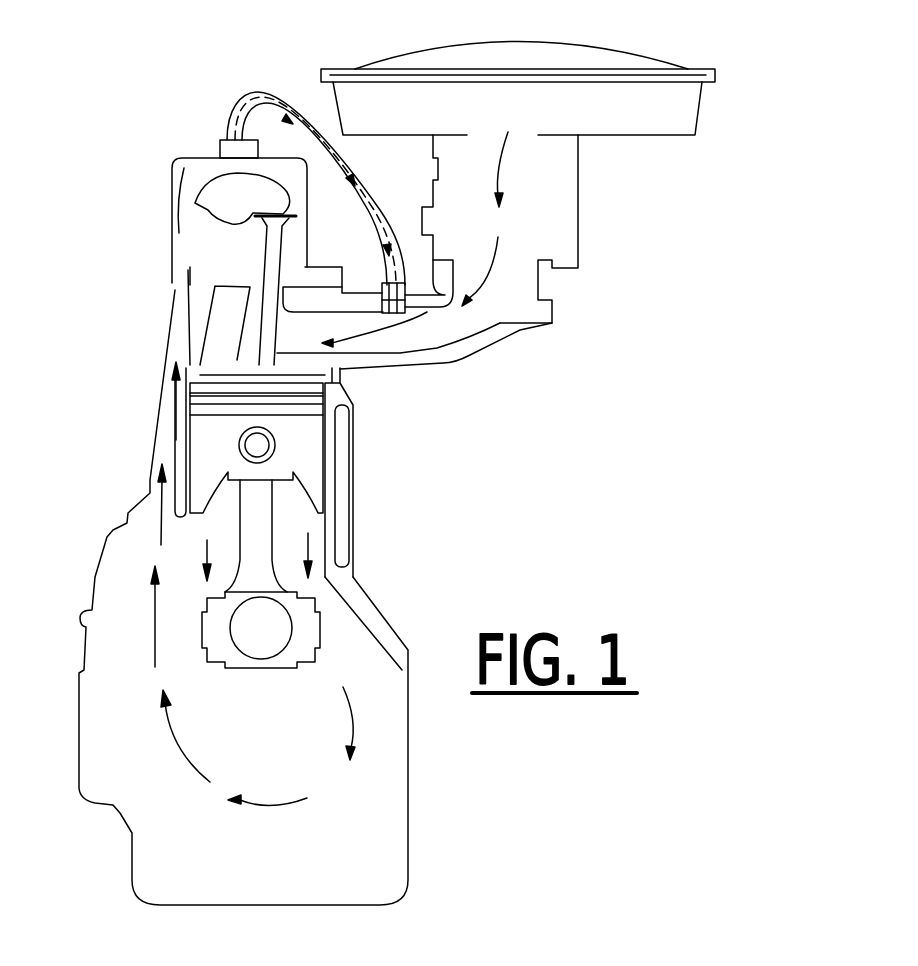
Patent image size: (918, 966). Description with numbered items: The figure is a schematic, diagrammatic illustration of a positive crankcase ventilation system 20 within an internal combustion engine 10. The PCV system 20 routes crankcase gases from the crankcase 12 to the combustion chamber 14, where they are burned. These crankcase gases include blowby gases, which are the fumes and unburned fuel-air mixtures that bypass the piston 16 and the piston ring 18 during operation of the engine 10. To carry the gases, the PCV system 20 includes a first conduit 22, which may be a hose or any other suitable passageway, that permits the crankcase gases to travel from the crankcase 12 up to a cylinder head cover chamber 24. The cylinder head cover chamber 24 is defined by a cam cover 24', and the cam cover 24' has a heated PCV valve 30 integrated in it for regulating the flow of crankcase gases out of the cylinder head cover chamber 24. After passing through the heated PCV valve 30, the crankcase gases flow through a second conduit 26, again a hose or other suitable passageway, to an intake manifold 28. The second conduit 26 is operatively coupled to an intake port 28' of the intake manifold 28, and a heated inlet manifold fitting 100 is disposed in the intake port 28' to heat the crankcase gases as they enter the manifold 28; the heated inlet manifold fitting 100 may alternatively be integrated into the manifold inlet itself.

The internal combustion engine 10 is at (734, 238).
The crankcase 12 is at (400, 812).
The combustion chamber 14 is at (217, 378).
The piston 16 is at (303, 452).
The piston ring 18 is at (388, 315).
The positive crankcase ventilation system 20 is at (155, 245).
The first conduit 22 is at (158, 488).
The cylinder head cover chamber 24 is at (186, 221).
The cam cover 24' is at (155, 125).
The second conduit 26 is at (373, 202).
The intake manifold 28 is at (422, 360).
The intake port 28' is at (402, 370).
The heated PCV valve 30 is at (220, 140).
The heated inlet manifold fitting 100 is at (413, 303).